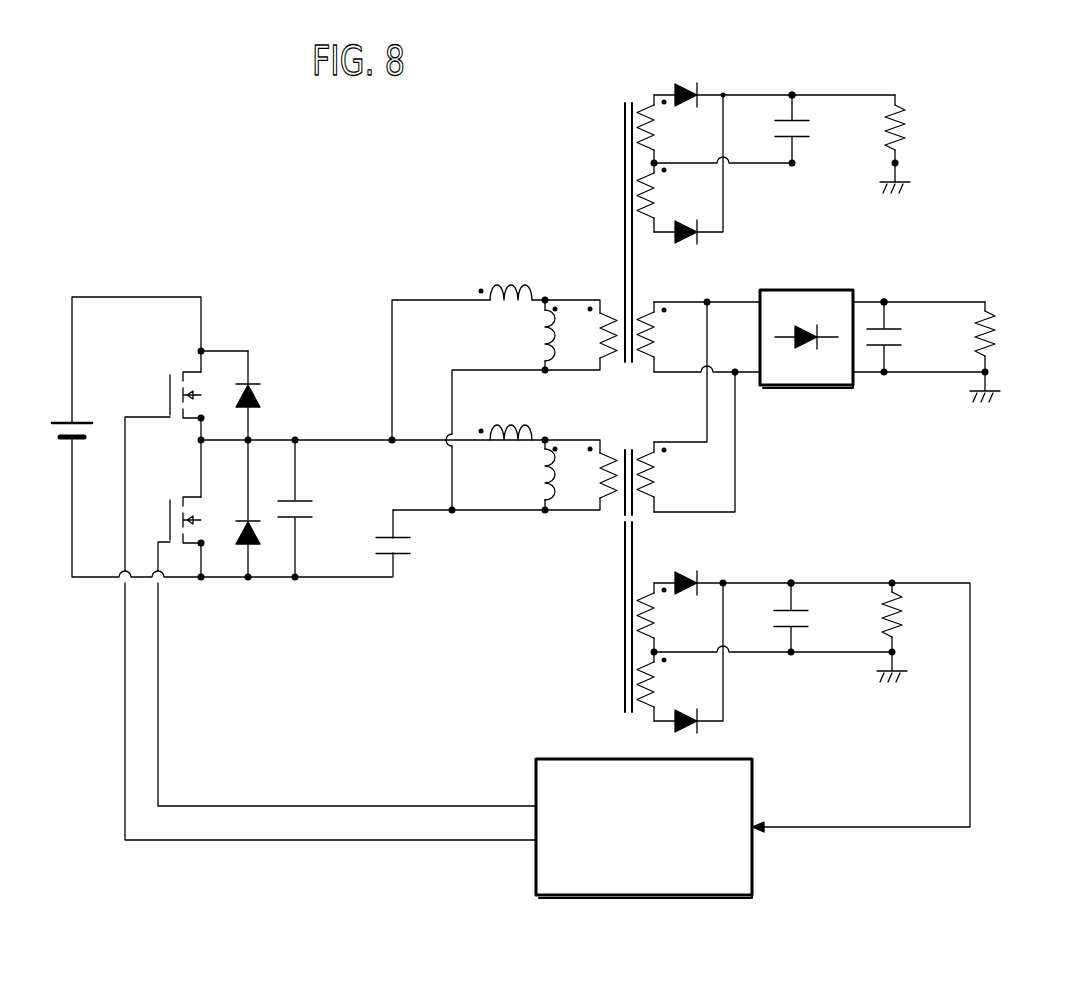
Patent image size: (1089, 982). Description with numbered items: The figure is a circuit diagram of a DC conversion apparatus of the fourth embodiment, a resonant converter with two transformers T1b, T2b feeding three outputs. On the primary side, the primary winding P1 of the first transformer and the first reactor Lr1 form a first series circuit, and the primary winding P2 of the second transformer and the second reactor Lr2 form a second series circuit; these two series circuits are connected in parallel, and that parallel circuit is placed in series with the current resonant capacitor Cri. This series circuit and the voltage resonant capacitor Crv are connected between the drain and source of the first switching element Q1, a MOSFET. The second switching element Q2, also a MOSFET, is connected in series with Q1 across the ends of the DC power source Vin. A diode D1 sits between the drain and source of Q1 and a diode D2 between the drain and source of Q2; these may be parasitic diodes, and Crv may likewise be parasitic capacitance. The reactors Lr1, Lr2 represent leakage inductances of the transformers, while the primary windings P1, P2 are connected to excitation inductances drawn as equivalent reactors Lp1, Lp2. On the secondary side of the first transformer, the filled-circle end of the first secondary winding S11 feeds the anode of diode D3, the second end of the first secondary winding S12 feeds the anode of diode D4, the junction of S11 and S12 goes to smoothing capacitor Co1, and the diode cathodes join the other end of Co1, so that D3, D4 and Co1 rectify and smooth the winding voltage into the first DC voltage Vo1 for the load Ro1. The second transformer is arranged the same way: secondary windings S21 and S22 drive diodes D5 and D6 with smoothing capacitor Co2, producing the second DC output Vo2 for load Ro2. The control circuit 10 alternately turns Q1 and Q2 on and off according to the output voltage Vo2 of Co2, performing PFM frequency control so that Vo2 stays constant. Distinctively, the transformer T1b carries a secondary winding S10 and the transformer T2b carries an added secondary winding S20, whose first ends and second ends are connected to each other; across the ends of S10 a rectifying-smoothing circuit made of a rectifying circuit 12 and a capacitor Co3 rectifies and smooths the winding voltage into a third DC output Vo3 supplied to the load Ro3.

The control circuit 10 is at (752, 856).
The rectifying circuit 12 is at (806, 290).
The DC power source Vin is at (83, 447).
The first switching element Q1 is at (174, 520).
The second switching element Q2 is at (163, 457).
The diode D1 is at (259, 508).
The diode D2 is at (259, 395).
The voltage resonant capacitor Crv is at (316, 508).
The current resonant capacitor Cri is at (410, 543).
The first reactor Lr1 is at (506, 280).
The second reactor Lr2 is at (506, 420).
The equivalent reactor Lp1 is at (531, 335).
The equivalent reactor Lp2 is at (531, 475).
The primary winding P1 is at (594, 333).
The primary winding P2 is at (594, 473).
The transformer T1b is at (631, 220).
The transformer T2b is at (631, 568).
The second secondary winding S10 is at (667, 337).
The first secondary winding S11 is at (668, 129).
The first secondary winding S12 is at (668, 197).
The second secondary winding S20 is at (667, 477).
The first secondary winding S21 is at (667, 617).
The first secondary winding S22 is at (667, 686).
The diode D3 is at (687, 82).
The diode D4 is at (687, 247).
The diode D5 is at (687, 570).
The diode D6 is at (701, 731).
The smoothing capacitor Co1 is at (816, 129).
The smoothing capacitor Co2 is at (814, 617).
The capacitor Co3 is at (907, 337).
The load Ro1 is at (914, 144).
The load Ro2 is at (911, 632).
The load Ro3 is at (1005, 352).
The first DC voltage Vo1 is at (792, 93).
The second DC output Vo2 is at (791, 581).
The third DC output Vo3 is at (884, 300).